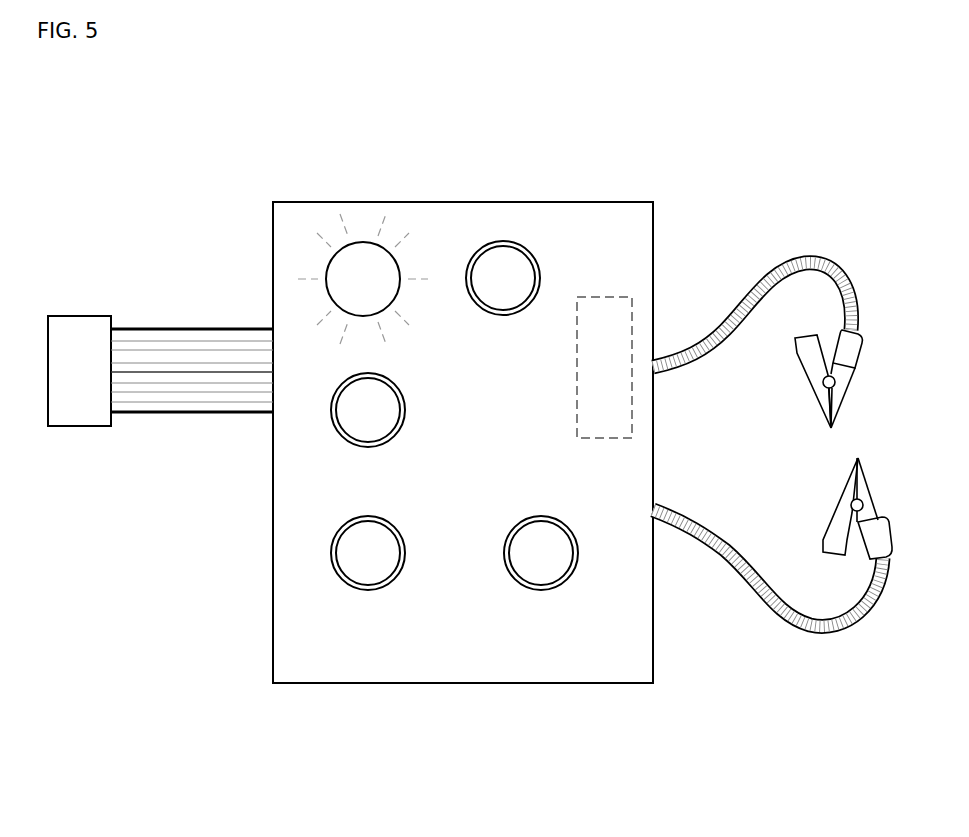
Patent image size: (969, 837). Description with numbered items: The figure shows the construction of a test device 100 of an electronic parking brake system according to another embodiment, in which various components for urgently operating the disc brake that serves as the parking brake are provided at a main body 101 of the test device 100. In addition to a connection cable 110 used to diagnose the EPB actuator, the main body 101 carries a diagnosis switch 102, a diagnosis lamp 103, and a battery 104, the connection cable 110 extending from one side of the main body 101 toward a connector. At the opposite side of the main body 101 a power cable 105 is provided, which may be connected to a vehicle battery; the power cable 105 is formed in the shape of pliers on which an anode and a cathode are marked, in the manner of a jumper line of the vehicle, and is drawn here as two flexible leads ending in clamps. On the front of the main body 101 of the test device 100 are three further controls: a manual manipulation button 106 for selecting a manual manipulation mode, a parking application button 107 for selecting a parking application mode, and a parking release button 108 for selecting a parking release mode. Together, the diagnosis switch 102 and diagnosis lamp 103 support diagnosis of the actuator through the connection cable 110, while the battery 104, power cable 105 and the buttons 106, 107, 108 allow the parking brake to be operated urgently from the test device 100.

The test device 100 is at (416, 126).
The main body 101 is at (612, 202).
The diagnosis switch 102 is at (490, 242).
The diagnosis lamp 103 is at (362, 242).
The battery 104 is at (610, 297).
The power cable 105 is at (793, 625).
The manual manipulation button 106 is at (333, 418).
The parking application button 107 is at (333, 560).
The parking release button 108 is at (578, 562).
The connection cable 110 is at (183, 328).